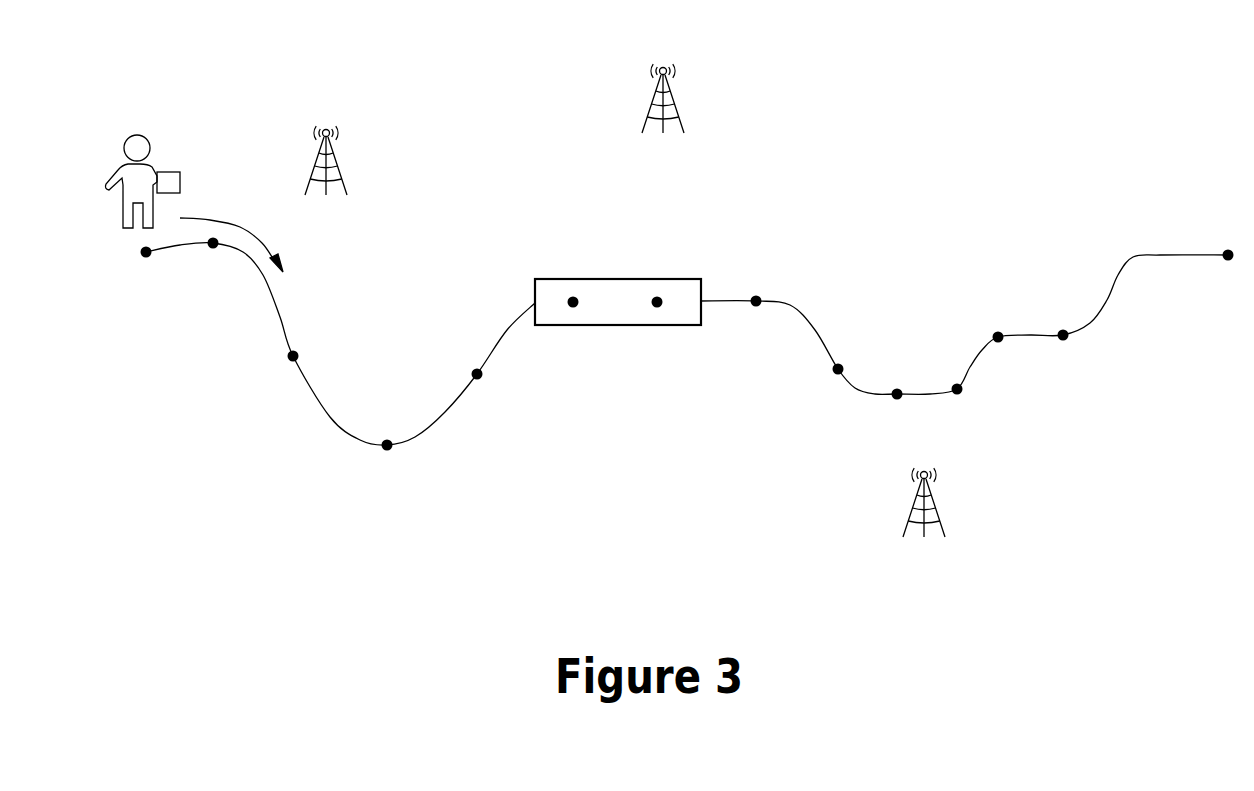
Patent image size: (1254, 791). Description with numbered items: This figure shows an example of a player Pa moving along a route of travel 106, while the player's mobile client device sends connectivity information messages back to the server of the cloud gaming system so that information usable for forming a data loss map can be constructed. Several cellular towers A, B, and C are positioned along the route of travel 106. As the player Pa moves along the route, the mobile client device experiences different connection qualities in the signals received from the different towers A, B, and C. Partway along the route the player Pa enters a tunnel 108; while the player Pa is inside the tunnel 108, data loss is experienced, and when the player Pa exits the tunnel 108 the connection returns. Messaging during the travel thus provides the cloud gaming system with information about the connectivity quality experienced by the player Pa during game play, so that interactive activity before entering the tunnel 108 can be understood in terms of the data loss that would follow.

The route of travel A 106 is at (212, 243).
The tunnel 108 is at (673, 279).
The cellular tower A is at (326, 134).
The cellular tower B is at (663, 73).
The cellular tower C is at (940, 502).
The player Pa is at (142, 165).